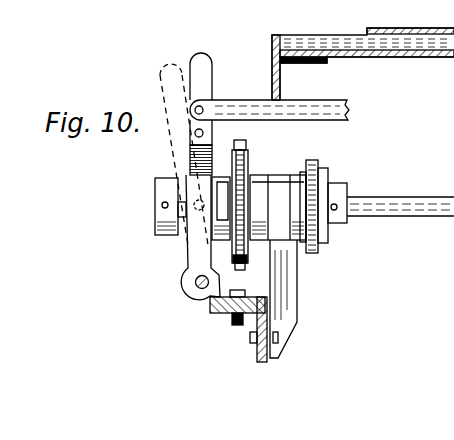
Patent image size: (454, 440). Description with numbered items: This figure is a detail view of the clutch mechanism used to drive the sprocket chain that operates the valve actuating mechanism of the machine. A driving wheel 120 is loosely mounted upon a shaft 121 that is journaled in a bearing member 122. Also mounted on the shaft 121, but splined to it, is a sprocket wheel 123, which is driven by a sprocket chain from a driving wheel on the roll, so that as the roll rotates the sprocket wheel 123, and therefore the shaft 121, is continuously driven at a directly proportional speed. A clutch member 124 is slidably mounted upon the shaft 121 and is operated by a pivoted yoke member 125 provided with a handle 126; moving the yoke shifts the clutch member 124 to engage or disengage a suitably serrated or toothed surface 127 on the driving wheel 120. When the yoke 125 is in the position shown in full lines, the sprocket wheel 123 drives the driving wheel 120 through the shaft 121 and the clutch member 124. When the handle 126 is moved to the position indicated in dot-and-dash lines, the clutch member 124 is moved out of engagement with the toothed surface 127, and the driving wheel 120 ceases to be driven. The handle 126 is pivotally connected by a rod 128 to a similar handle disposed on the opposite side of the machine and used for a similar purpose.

The driving wheel 120 is at (250, 156).
The shaft 121 is at (405, 203).
The bearing member 122 is at (287, 174).
The sprocket wheel 123 is at (312, 166).
The clutch member 124 is at (195, 155).
The pivoted yoke member 125 is at (198, 247).
The handle 126 is at (195, 73).
The serrated or toothed surface 127 is at (223, 170).
The rod 128 is at (236, 99).